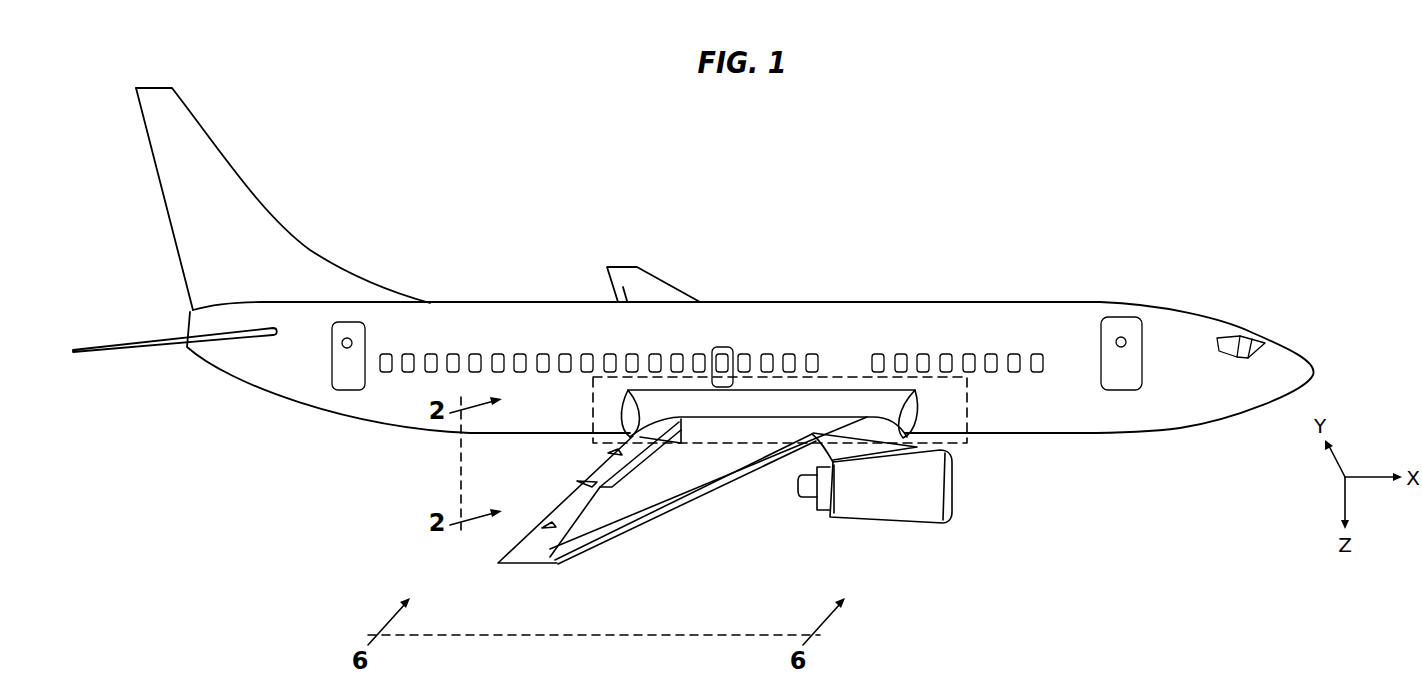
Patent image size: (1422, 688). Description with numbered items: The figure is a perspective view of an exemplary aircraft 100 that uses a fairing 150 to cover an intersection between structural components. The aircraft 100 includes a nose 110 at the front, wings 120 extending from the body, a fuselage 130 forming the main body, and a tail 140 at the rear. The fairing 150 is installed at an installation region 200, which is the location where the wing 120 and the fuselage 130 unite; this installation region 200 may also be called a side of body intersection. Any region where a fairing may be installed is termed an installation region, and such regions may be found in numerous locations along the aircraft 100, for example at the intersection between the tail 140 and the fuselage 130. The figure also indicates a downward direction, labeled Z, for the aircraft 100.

The aircraft 100 is at (715, 384).
The nose 110 is at (1283, 362).
The wing 120 is at (590, 523).
The fuselage 130 is at (787, 315).
The tail 140 is at (191, 174).
The fairing 150 is at (847, 389).
The installation region 200 is at (970, 393).